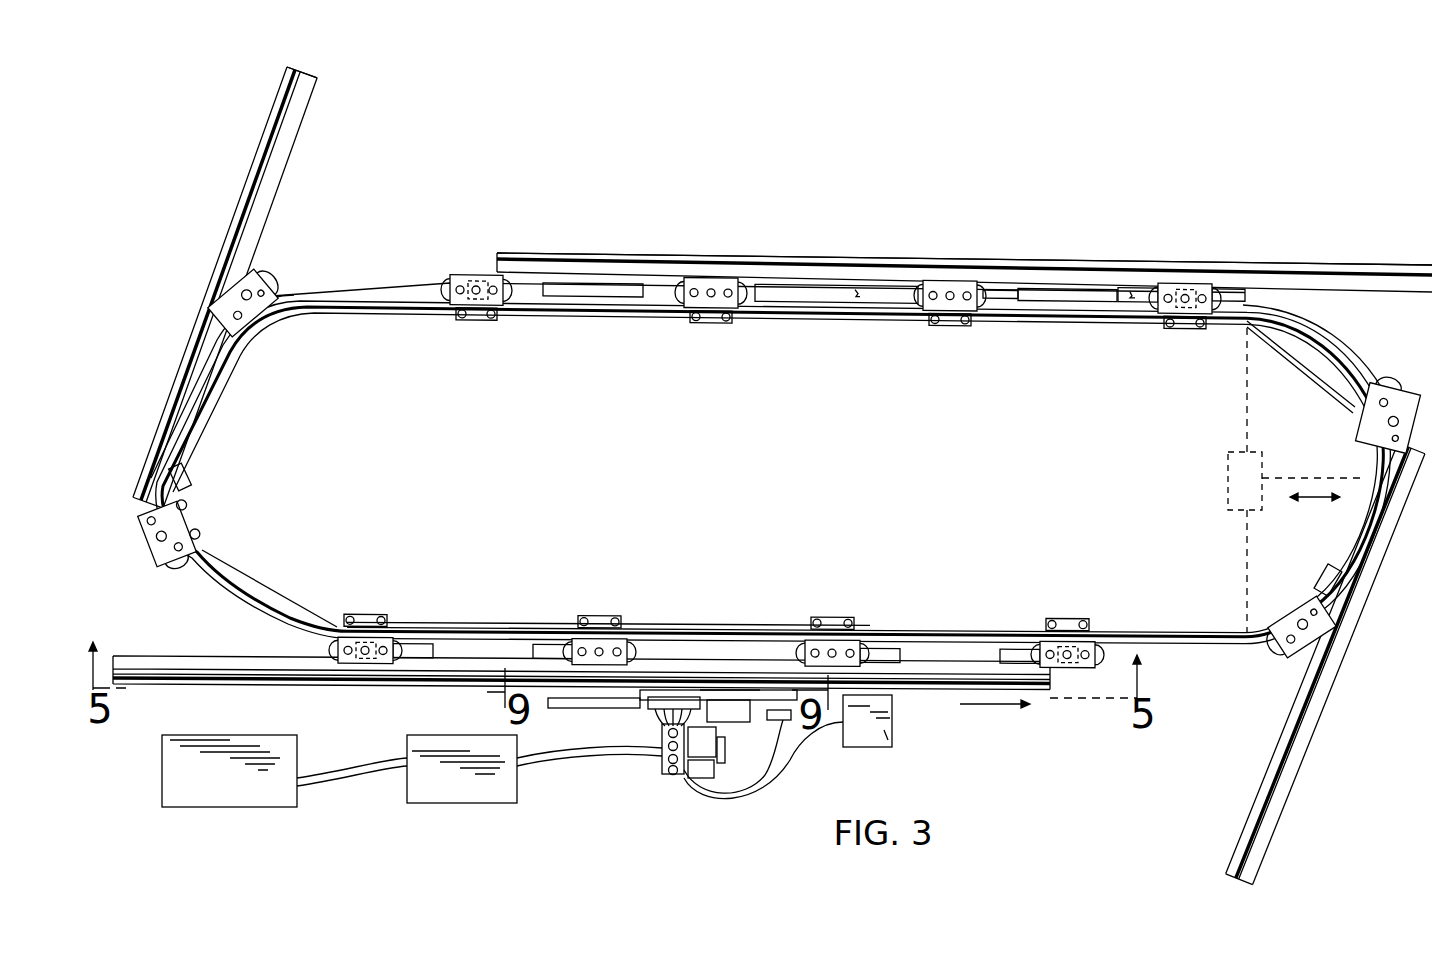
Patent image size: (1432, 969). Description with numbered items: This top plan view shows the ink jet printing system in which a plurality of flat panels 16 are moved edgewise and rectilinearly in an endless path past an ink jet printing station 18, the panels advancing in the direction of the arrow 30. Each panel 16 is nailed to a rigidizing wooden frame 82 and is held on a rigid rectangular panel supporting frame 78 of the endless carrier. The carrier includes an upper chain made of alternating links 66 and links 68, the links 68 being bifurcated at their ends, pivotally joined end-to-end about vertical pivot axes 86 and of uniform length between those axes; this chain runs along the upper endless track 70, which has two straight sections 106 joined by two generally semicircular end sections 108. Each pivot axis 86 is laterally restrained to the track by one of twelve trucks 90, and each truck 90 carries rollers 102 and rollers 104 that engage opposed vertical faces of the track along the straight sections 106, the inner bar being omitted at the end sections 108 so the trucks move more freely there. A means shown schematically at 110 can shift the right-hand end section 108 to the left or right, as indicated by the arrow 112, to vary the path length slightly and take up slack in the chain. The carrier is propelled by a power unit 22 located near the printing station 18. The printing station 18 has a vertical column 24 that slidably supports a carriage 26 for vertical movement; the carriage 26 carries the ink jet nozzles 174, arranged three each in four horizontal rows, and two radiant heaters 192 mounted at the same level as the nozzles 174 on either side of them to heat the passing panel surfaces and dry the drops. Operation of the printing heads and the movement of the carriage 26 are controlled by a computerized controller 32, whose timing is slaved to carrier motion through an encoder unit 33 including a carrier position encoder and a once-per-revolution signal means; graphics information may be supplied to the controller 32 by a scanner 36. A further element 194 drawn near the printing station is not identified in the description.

The flat panels 16 is at (772, 462).
The panel supporting frame 78 is at (292, 121).
The rigidizing wooden frame 82 is at (304, 69).
The truck 90 is at (256, 290).
The vertical pivot axis 86 is at (476, 300).
The link 66 is at (385, 290).
The straight section 106 is at (765, 317).
The semicircular end section 108 is at (205, 403).
The link 68 is at (192, 475).
The upper endless track 70 is at (900, 305).
The roller 102 is at (1230, 299).
The roller 104 is at (1200, 328).
The end section moving means 110 is at (1228, 478).
The arrow 112 is at (1312, 500).
The arrow 30 is at (1000, 706).
The scanner 36 is at (240, 735).
The computerized controller 32 is at (435, 735).
The power unit 22 is at (878, 748).
The ink jet printing station 18 is at (672, 777).
The vertical column 24 is at (706, 780).
The carriage 26 is at (728, 723).
The radiant heater 192 is at (572, 708).
The nozzle 174 is at (656, 716).
The plate edge 194 is at (752, 688).
The encoder unit 33 is at (788, 736).